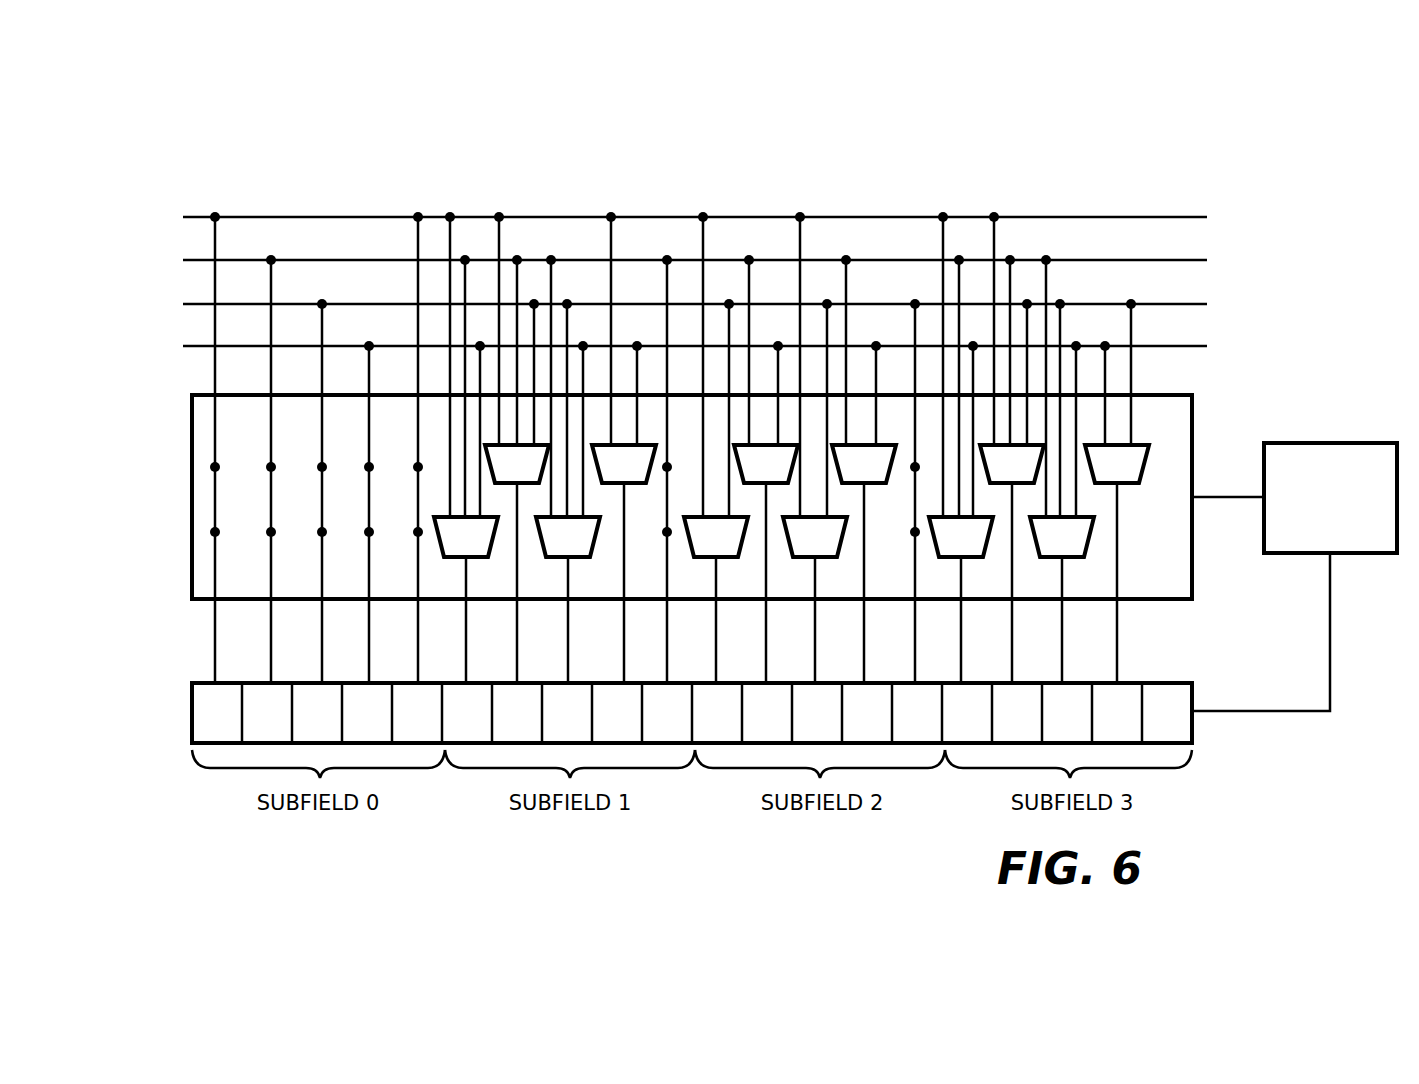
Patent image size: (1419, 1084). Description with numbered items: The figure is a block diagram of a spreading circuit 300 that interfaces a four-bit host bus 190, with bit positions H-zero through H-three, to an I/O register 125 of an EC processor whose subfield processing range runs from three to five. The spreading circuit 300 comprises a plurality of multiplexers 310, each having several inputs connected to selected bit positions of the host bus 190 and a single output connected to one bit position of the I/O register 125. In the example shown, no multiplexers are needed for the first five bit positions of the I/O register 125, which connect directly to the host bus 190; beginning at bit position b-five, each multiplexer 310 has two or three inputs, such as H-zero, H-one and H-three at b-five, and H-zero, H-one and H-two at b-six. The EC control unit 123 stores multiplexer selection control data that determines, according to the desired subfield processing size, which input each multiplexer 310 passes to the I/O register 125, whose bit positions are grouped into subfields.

The host bus 190 is at (145, 245).
The spreading circuit 300 is at (1178, 395).
The multiplexer 310 is at (1146, 463).
The EC control unit 123 is at (1308, 442).
The I/O register 125 is at (192, 712).